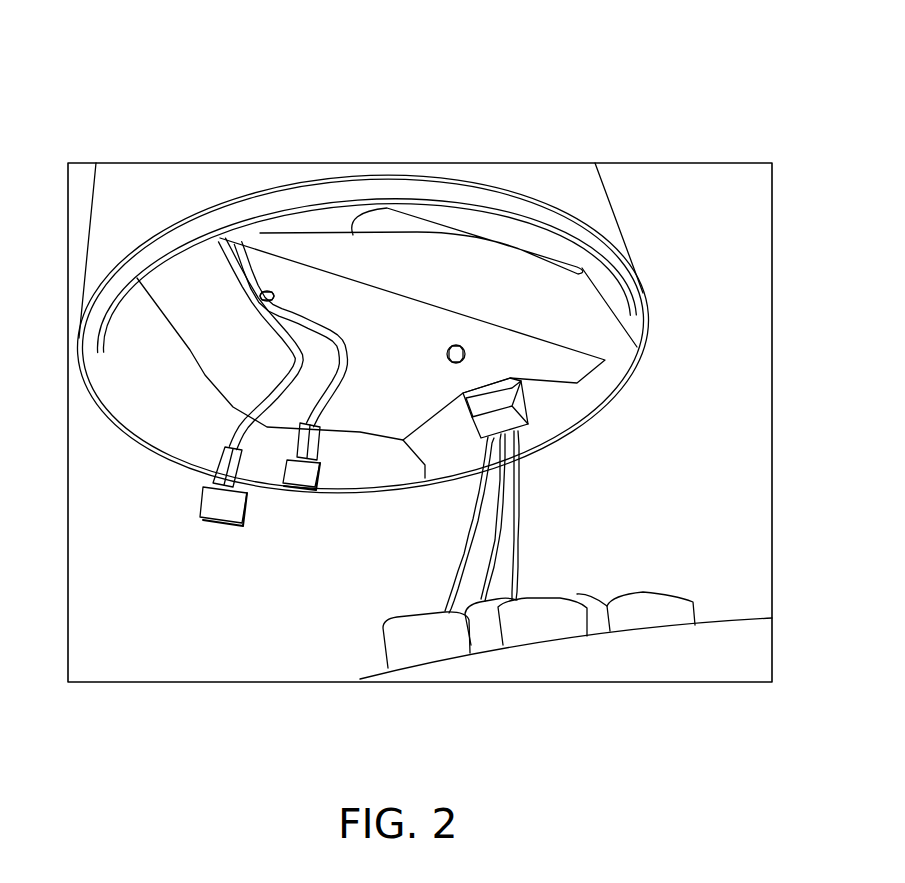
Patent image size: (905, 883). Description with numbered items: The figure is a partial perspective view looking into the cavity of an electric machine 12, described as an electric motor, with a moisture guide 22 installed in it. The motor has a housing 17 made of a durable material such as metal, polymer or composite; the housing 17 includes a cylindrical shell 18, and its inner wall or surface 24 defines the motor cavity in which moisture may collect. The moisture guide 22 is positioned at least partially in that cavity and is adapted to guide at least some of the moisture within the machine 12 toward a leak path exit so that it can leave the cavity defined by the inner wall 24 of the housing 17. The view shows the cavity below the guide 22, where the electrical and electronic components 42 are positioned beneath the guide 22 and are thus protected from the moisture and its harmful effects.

The electric machine 12 is at (467, 80).
The housing 17 is at (552, 198).
The cylindrical shell 18 is at (596, 202).
The moisture guide 22 is at (385, 328).
The inner wall or surface 24 is at (346, 470).
The electrical and electronic components 42 is at (467, 662).